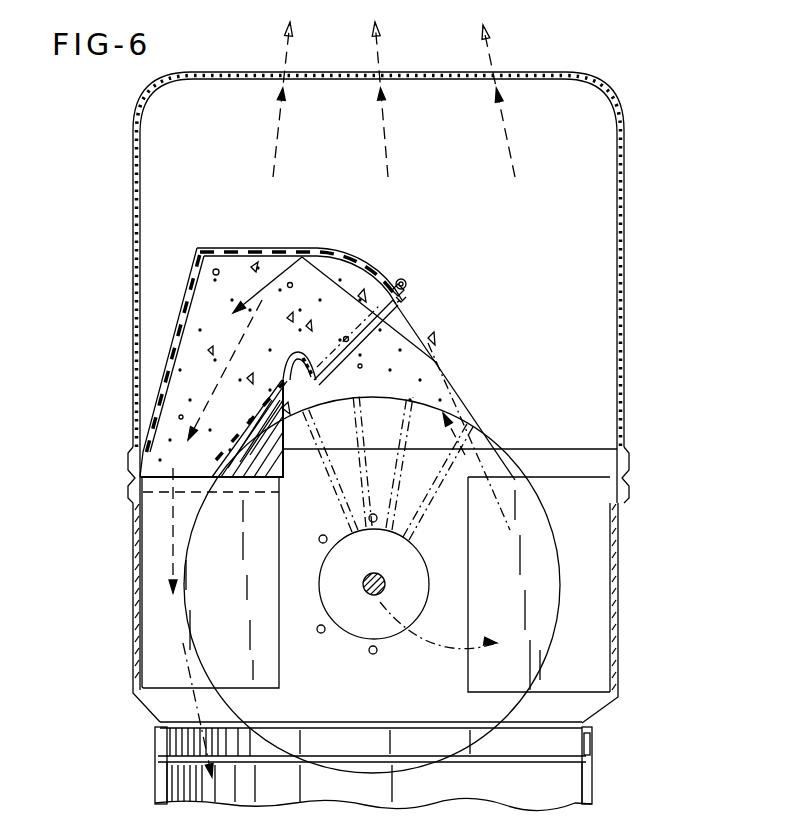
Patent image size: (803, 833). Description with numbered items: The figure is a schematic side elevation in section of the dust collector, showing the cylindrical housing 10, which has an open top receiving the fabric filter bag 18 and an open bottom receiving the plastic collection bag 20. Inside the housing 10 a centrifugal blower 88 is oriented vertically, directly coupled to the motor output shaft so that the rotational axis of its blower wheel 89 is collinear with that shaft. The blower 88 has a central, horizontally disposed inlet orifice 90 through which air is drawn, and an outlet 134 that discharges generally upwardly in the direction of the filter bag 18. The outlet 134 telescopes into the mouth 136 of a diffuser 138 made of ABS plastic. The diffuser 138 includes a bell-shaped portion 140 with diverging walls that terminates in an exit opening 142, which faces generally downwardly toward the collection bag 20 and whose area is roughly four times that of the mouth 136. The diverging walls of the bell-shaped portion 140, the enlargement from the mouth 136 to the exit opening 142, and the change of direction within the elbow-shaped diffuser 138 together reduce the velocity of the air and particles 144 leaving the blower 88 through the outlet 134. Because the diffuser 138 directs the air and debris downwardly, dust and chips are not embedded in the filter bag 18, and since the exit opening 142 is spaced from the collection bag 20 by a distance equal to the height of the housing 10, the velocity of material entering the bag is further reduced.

The cylindrical housing 10 is at (632, 520).
The filter bag 18 is at (624, 157).
The collection bag 20 is at (590, 790).
The centrifugal blower 88 is at (497, 430).
The blower wheel 89 is at (365, 582).
The inlet orifice 90 is at (424, 565).
The outlet 134 is at (406, 330).
The mouth 136 is at (395, 289).
The diffuser 138 is at (362, 258).
The bell-shaped portion 140 is at (140, 380).
The exit opening 142 is at (165, 465).
The air and particles 144 is at (253, 378).